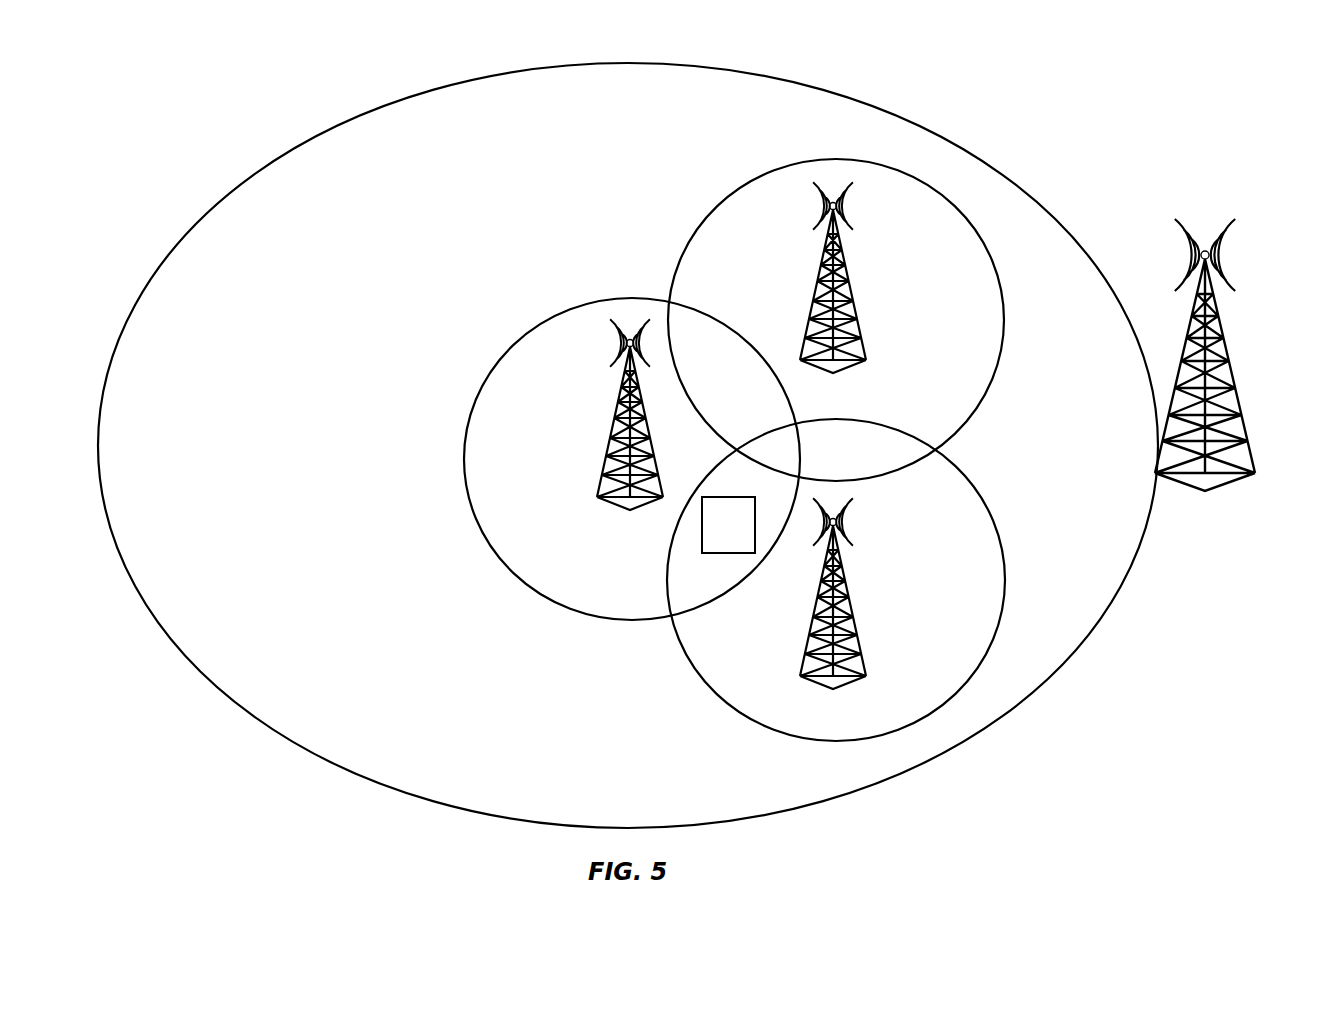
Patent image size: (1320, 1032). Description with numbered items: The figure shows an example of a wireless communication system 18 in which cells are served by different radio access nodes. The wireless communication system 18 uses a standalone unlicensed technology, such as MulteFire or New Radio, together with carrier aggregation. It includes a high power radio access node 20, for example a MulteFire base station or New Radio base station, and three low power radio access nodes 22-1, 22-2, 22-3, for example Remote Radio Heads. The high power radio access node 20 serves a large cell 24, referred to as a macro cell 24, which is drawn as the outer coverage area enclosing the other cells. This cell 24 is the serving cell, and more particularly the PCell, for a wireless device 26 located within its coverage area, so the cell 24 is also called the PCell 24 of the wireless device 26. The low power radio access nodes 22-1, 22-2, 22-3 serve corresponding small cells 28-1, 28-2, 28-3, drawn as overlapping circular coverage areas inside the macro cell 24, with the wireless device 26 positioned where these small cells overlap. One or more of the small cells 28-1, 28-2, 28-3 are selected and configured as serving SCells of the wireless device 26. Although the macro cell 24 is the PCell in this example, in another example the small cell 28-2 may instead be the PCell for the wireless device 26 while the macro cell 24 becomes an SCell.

The wireless communication system 18 is at (1042, 106).
The high power radio access node 20 is at (1230, 365).
The low power radio access node 22-1 is at (850, 275).
The low power radio access node 22-2 is at (614, 420).
The low power radio access node 22-3 is at (850, 592).
The macro cell 24 is at (1038, 688).
The wireless device 26 is at (718, 549).
The small cell 28-1 is at (1003, 317).
The small cell 28-2 is at (620, 298).
The small cell 28-3 is at (985, 497).